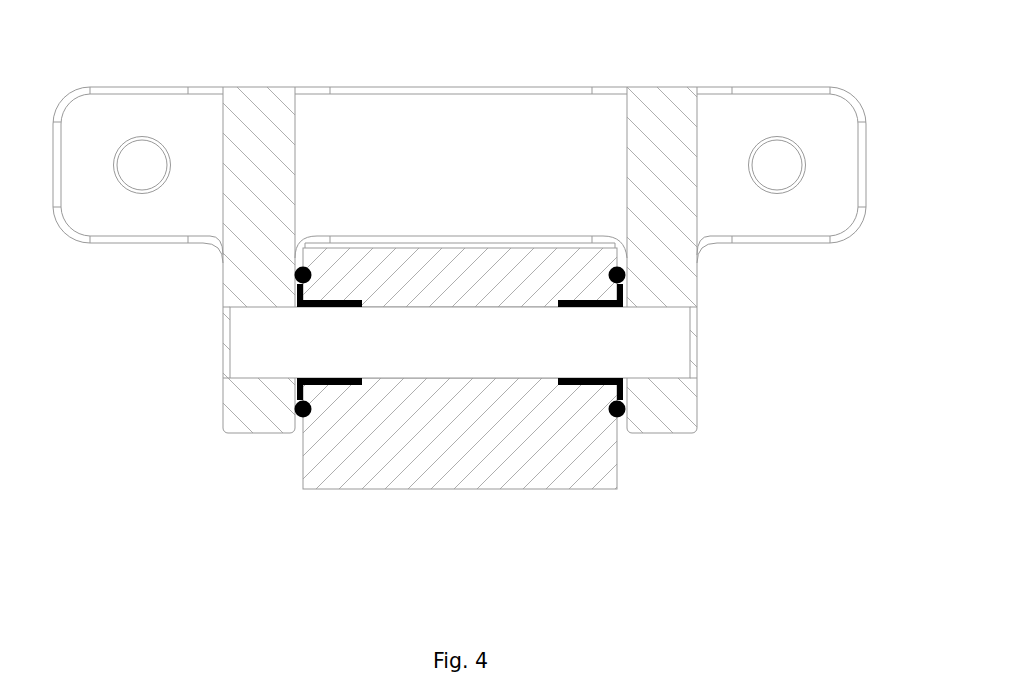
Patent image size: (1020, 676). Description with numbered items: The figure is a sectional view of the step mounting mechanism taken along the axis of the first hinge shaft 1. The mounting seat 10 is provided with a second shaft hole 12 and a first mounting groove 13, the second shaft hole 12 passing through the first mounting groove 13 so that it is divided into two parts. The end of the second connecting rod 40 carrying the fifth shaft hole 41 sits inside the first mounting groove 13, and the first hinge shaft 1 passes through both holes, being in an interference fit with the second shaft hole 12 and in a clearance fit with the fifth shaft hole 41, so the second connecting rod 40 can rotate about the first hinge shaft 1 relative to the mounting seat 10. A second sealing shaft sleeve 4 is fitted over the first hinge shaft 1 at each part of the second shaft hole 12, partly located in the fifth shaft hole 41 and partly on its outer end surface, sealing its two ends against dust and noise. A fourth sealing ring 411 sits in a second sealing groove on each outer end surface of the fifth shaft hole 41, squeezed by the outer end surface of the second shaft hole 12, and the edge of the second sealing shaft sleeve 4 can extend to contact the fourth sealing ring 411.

The first hinge shaft 1 is at (680, 339).
The second sealing shaft sleeve 4 is at (297, 383).
The mounting seat 10 is at (258, 110).
The second shaft hole 12 is at (257, 307).
The first mounting groove 13 is at (402, 135).
The second connecting rod 40 is at (512, 463).
The fifth shaft hole 41 is at (455, 300).
The fourth sealing ring 411 is at (299, 418).